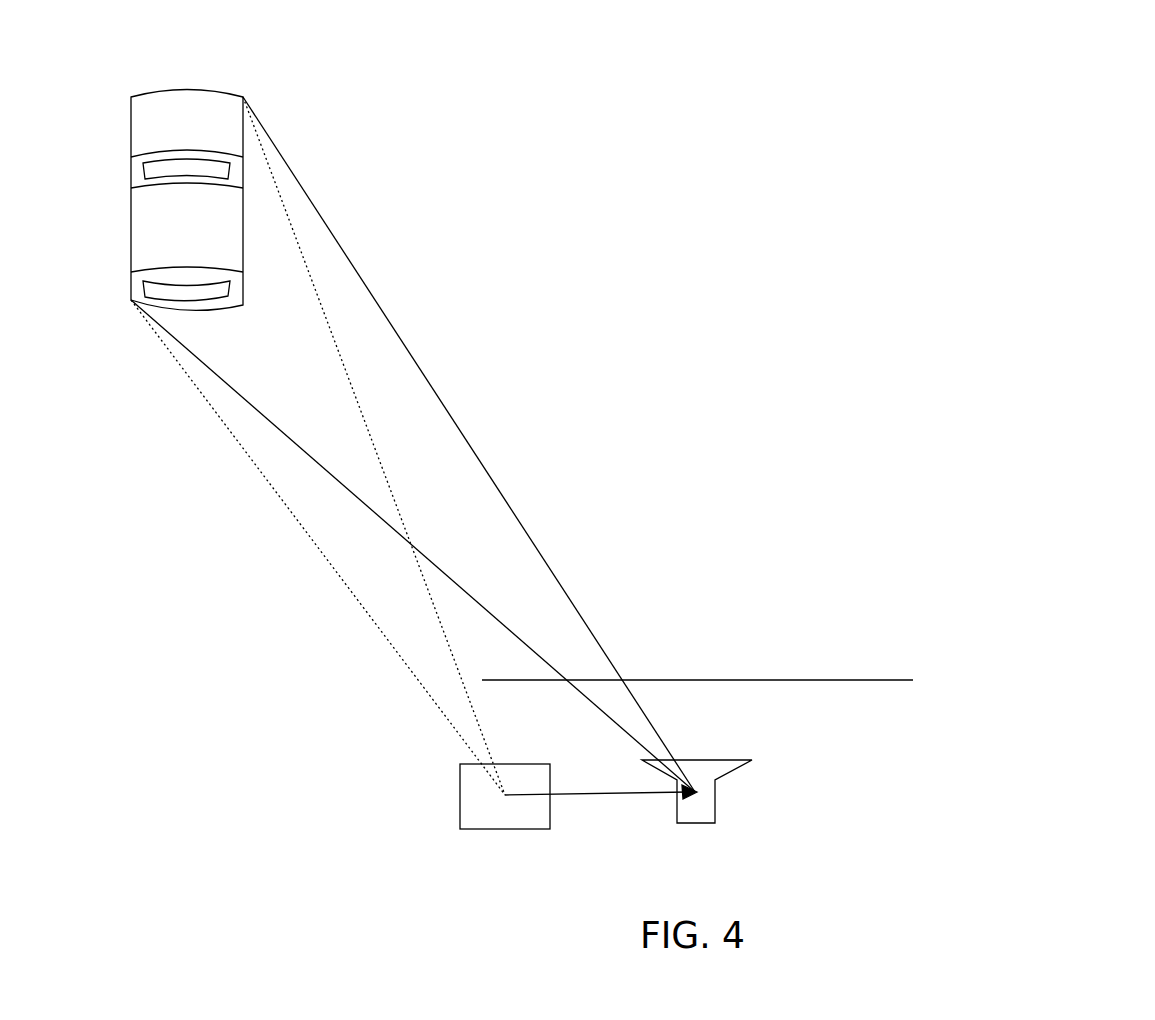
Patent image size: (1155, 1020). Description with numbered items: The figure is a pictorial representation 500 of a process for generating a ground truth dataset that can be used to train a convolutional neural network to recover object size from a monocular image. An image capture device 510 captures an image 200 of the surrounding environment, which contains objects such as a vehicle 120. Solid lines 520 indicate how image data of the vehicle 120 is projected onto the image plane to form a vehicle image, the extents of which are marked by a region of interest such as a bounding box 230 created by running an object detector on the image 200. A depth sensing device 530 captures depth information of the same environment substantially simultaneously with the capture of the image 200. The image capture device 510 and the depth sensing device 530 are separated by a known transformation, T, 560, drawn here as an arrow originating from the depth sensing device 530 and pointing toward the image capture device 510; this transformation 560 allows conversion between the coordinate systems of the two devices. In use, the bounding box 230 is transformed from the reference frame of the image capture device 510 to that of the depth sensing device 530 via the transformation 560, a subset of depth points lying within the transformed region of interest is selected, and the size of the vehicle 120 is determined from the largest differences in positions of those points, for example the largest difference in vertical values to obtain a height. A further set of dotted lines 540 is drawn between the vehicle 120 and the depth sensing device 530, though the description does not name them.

The pictorial representation 500 is at (862, 217).
The vehicle 120 is at (243, 188).
The solid lines 520 is at (535, 543).
The expected signal path 540 is at (365, 608).
The image 200 is at (795, 680).
The bounding box 230 is at (605, 680).
The depth sensing device 530 is at (460, 803).
The transformation T 560 is at (580, 795).
The image capture device 510 is at (715, 803).